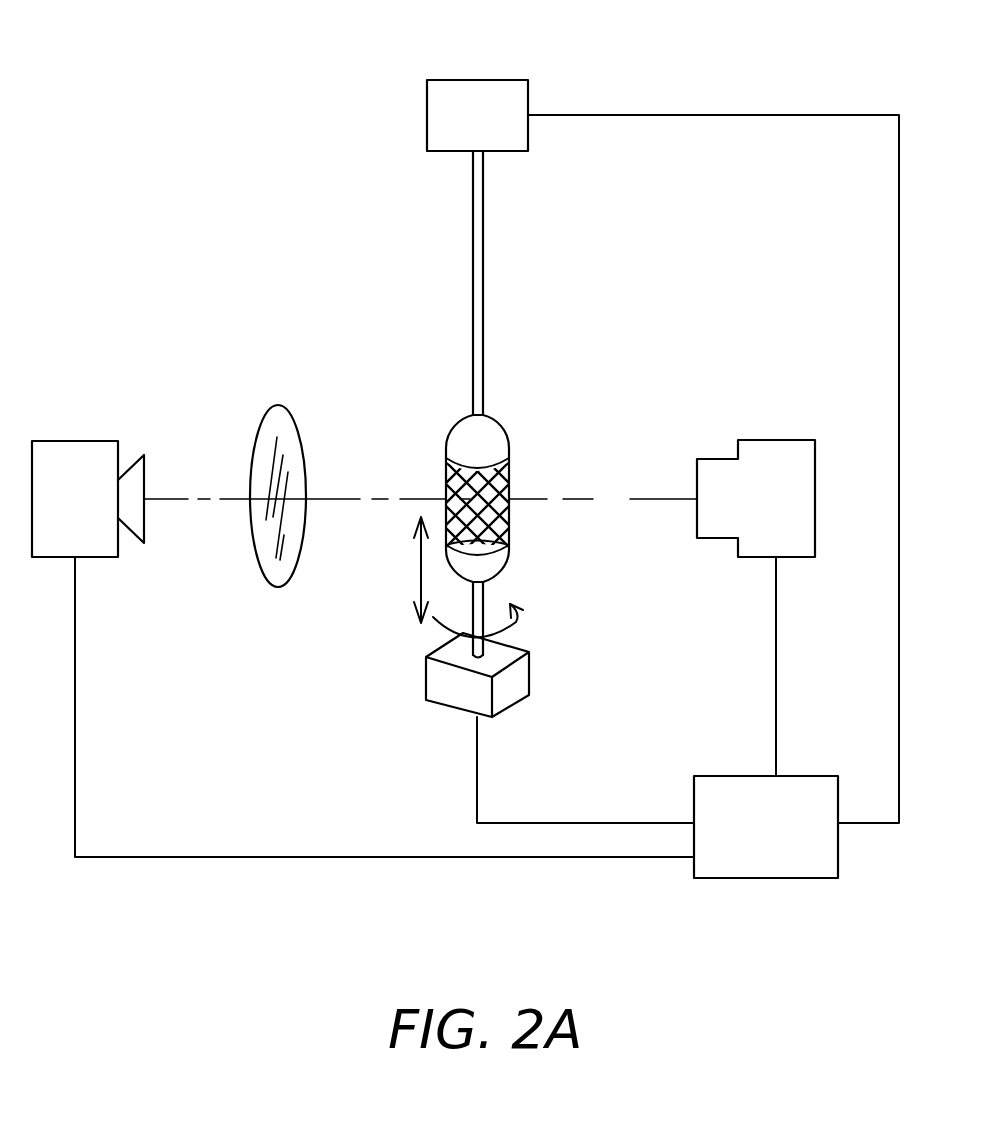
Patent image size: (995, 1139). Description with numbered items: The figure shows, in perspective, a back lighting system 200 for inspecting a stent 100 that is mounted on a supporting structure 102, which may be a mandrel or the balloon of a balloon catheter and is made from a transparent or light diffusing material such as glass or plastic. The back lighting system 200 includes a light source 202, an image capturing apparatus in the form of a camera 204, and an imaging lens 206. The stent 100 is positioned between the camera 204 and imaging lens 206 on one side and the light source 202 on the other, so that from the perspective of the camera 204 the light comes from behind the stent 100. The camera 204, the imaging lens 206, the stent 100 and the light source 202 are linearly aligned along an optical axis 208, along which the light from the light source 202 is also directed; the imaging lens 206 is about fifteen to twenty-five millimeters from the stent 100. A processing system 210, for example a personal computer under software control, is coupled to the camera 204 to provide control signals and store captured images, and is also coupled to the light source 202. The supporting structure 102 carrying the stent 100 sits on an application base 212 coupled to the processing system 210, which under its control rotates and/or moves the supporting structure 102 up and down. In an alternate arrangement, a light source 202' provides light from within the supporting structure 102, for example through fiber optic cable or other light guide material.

The back lighting system 200 is at (258, 232).
The light source 202' is at (448, 88).
The light source 202 is at (746, 458).
The camera 204 is at (88, 557).
The imaging lens 206 is at (260, 420).
The optical axis 208 is at (410, 498).
The processing system 210 is at (742, 776).
The application base 212 is at (527, 650).
The stent 100 is at (512, 459).
The supporting structure 102 is at (498, 430).